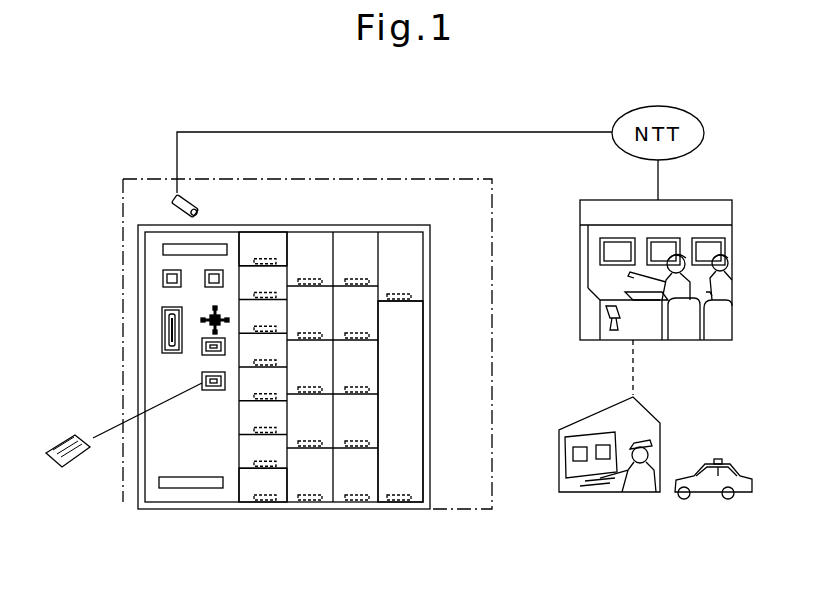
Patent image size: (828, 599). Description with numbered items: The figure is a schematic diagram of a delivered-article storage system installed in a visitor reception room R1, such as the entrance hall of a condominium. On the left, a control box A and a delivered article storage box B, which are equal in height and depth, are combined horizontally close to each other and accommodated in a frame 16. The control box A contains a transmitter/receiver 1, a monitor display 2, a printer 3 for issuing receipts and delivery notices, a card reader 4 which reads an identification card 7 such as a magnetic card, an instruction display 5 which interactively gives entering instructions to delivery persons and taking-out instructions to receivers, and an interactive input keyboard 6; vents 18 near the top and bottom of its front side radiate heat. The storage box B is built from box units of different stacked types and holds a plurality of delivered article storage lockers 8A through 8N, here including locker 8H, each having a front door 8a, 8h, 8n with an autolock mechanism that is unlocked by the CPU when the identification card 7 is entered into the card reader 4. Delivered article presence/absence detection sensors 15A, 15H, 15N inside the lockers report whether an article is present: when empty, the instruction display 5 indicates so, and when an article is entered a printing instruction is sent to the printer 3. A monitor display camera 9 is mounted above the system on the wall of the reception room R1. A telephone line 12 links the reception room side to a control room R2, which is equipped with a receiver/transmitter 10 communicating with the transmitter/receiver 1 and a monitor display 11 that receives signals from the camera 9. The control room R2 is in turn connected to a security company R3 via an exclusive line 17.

The transmitter/receiver 1 is at (162, 331).
The monitor display 2 is at (163, 278).
The printer 3 is at (202, 348).
The card reader 4 is at (202, 378).
The instruction display 5 is at (223, 272).
The interactive input keyboard 6 is at (208, 318).
The identification card 7 is at (72, 463).
The delivered article storage locker 8A is at (258, 250).
The door 8a is at (272, 246).
The delivered article storage locker 8H is at (247, 503).
The door 8h is at (277, 490).
The delivered article storage locker 8N is at (390, 482).
The door 8n is at (410, 482).
The monitor display camera 9 is at (188, 199).
The receiver/transmitter 10 is at (597, 300).
The monitor display 11 is at (600, 252).
The telephone line 12 is at (398, 132).
The delivered article presence/absence detection sensor 15A is at (272, 258).
The delivered article presence/absence detection sensor 15H is at (265, 505).
The delivered article presence/absence detection sensor 15N is at (397, 505).
The frame 16 is at (143, 509).
The exclusive line 17 is at (640, 381).
The vents 18 is at (165, 244).
The control box A is at (137, 227).
The delivered article storage box B is at (368, 231).
The visitor reception room R1 is at (448, 190).
The control room R2 is at (585, 213).
The security company R3 is at (593, 413).